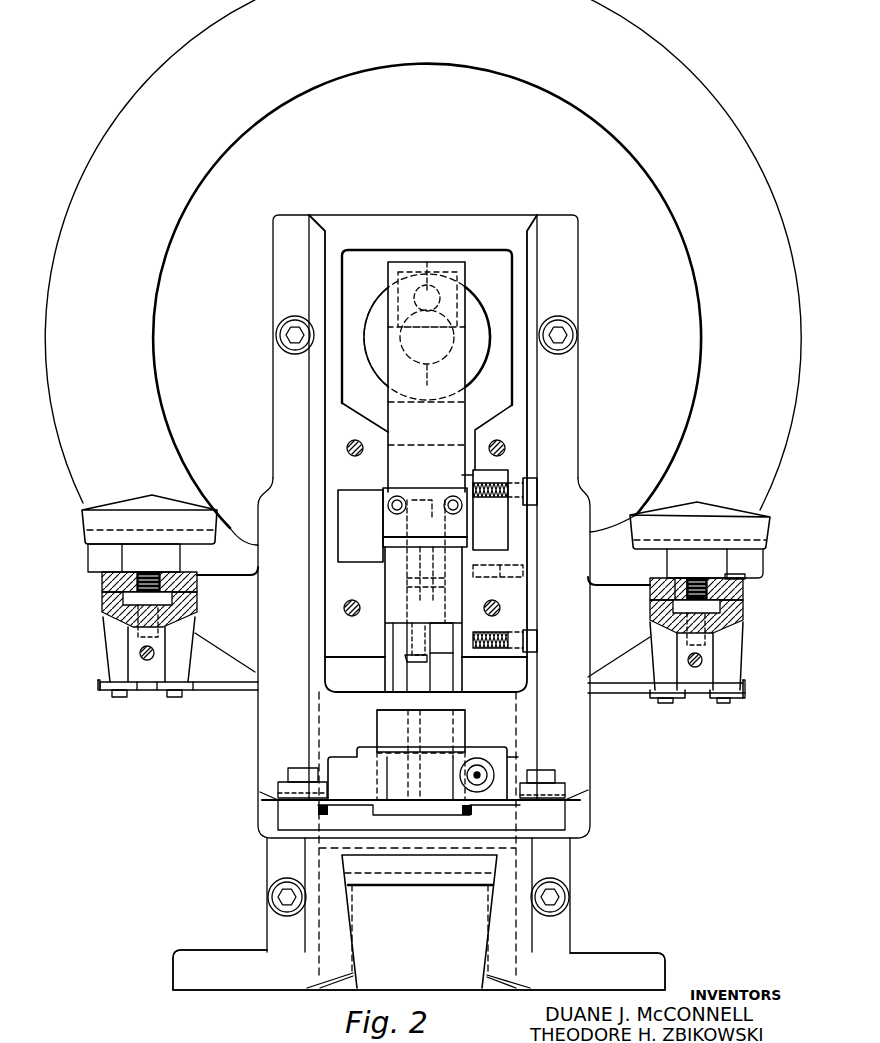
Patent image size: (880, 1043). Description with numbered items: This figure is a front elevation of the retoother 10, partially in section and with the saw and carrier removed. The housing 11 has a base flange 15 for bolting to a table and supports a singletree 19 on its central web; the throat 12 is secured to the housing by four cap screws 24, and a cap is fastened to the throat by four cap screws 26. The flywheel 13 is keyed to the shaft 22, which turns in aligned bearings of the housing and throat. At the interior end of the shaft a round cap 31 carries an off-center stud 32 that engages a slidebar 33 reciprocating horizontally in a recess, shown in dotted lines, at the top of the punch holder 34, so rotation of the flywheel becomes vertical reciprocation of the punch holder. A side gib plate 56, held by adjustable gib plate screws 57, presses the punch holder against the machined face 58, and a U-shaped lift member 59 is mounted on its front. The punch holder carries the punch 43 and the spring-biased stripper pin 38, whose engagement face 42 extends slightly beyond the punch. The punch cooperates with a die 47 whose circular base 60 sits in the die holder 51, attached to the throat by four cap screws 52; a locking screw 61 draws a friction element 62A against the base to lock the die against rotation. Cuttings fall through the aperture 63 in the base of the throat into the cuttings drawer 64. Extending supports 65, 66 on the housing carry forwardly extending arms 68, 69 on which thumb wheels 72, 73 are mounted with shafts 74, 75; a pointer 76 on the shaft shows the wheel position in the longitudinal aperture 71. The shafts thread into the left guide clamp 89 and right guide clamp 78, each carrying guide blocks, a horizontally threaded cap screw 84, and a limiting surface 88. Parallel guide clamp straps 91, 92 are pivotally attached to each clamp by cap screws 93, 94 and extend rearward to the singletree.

The retoother 10 is at (252, 994).
The housing 11 is at (203, 946).
The throat 12 is at (432, 215).
The flywheel 13 is at (706, 98).
The base flange 15 is at (178, 968).
The singletree 19 is at (608, 689).
The shaft 22 is at (427, 348).
The cap screws 24 is at (276, 334).
The cap screws 26 is at (357, 436).
The round cap 31 is at (376, 306).
The stud 32 is at (391, 283).
The slidebar 33 is at (466, 270).
The punch holder 34 is at (455, 413).
The stripper pin 38 is at (405, 646).
The engagement face 42 is at (405, 662).
The punch 43 is at (440, 656).
The die 47 is at (374, 720).
The die holder 51 is at (338, 765).
The cap screws 52 is at (290, 769).
The side gib plate 56 is at (474, 532).
The gib plate screws 57 is at (488, 499).
The machined face 58 is at (388, 466).
The lift member 59 is at (392, 541).
The circular base 60 is at (466, 722).
The locking screw 61 is at (478, 781).
The friction element 62A is at (481, 764).
The aperture 63 is at (408, 840).
The cuttings drawer 64 is at (405, 941).
The extending support 65 is at (238, 537).
The extending support 66 is at (607, 540).
The arm 68 is at (102, 587).
The arm 69 is at (745, 592).
The longitudinal aperture 71 is at (684, 580).
The thumb wheel 72 is at (114, 510).
The thumb wheel 73 is at (718, 513).
The shaft 74 is at (148, 572).
The shaft 75 is at (702, 579).
The pointer 76 is at (746, 578).
The right guide clamp 78 is at (745, 615).
The cap screw 84 is at (140, 654).
The surface 88 is at (694, 685).
The left guide clamp 89 is at (102, 603).
The guide clamp strap 91 is at (100, 692).
The guide clamp strap 92 is at (190, 693).
The cap screw 93 is at (116, 698).
The cap screw 94 is at (172, 698).